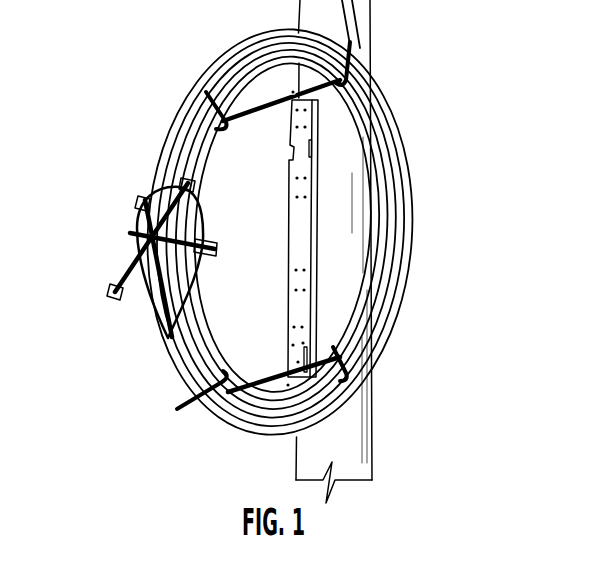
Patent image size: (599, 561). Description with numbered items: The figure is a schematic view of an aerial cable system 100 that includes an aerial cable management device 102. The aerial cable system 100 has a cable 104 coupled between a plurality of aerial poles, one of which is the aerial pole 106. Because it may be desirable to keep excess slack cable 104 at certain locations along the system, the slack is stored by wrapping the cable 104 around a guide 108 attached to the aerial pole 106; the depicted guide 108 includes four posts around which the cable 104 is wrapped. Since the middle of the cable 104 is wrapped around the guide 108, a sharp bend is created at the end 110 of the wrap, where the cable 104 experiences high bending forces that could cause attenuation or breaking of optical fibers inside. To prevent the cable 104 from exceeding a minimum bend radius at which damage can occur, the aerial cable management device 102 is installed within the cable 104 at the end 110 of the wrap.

The aerial cable system 100 is at (94, 90).
The aerial cable management device 102 is at (147, 222).
The cable 104 is at (387, 95).
The aerial pole 106 is at (362, 437).
The guide 108 is at (298, 372).
The end of the wrap 110 is at (110, 267).